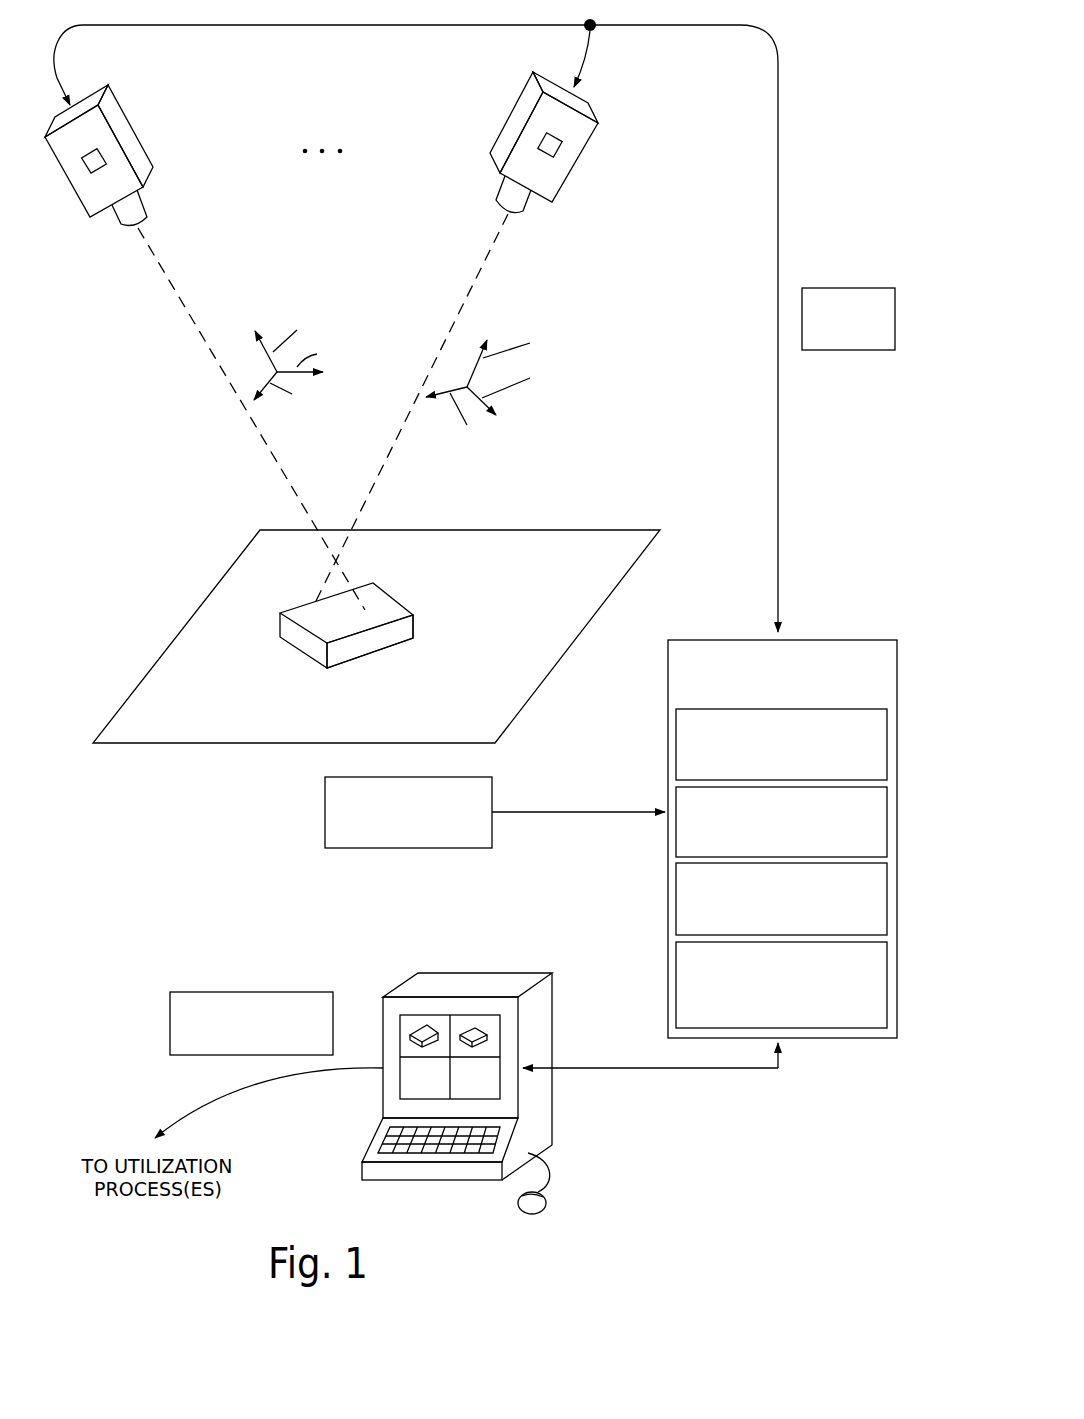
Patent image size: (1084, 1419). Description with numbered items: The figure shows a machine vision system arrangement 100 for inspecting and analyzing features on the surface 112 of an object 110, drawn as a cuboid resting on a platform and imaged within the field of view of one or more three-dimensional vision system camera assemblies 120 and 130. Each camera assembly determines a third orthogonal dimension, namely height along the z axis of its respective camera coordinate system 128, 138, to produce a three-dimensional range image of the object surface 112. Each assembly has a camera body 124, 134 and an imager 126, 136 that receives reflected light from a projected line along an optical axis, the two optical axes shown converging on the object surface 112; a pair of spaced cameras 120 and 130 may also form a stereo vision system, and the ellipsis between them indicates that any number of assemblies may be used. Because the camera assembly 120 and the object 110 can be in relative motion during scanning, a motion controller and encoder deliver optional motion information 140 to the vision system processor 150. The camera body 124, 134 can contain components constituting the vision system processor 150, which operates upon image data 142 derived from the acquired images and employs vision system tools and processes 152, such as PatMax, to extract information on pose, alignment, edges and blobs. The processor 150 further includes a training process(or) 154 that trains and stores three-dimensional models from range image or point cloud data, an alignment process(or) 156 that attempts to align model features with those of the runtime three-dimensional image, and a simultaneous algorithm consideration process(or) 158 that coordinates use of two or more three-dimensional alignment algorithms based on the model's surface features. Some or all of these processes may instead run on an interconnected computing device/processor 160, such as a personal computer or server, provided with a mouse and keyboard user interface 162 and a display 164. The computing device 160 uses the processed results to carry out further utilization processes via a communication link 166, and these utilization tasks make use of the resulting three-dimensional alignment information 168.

The machine vision system arrangement 100 is at (797, 162).
The object 110 is at (382, 607).
The object surface 112 is at (367, 642).
The 3D vision system camera assembly 120 is at (133, 141).
The camera body 124 is at (147, 181).
The imager 126 is at (98, 148).
The camera coordinate system 128 is at (262, 351).
The 3D vision system camera assembly 130 is at (505, 128).
The camera body 134 is at (500, 163).
The imager 136 is at (547, 134).
The camera coordinate system 138 is at (461, 377).
The motion information 140 is at (407, 848).
The image data 142 is at (842, 352).
The vision system processor 150 is at (812, 808).
The vision system tools and processes 152 is at (888, 725).
The training process(or) 154 is at (888, 817).
The alignment process(or) 156 is at (888, 898).
The simultaneous algorithm consideration process(or) 158 is at (888, 985).
The computing device/processor 160 is at (493, 1084).
The user interface 162 is at (520, 1203).
The display 164 is at (489, 1081).
The communication link 166 is at (220, 1090).
The 3D alignment information 168 is at (237, 990).